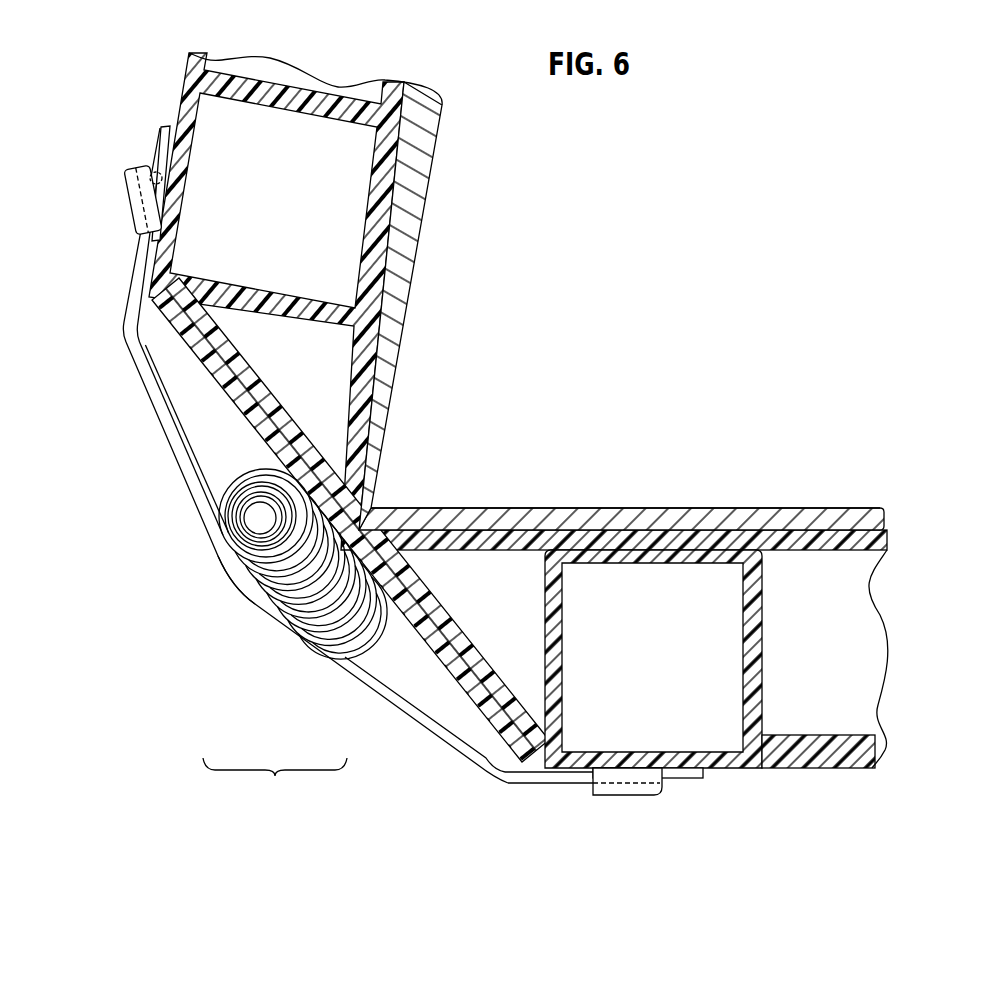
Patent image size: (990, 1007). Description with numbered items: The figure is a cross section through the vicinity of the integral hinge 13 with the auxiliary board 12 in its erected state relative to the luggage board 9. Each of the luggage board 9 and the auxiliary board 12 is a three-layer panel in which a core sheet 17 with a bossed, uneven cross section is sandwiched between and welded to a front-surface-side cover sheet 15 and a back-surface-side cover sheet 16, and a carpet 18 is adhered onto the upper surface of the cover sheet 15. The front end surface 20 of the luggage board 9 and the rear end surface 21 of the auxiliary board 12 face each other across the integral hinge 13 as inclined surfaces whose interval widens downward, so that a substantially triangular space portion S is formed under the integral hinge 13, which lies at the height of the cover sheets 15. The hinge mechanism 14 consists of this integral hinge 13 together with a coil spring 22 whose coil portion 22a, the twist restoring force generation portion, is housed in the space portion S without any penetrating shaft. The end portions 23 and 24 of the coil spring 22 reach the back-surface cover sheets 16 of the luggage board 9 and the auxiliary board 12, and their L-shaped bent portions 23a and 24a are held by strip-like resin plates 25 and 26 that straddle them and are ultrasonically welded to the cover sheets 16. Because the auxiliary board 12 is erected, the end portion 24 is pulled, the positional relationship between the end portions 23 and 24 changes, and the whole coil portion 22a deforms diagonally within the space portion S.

The luggage board 9 is at (678, 505).
The auxiliary board 12 is at (407, 309).
The integral hinge 13 is at (295, 627).
The hinge mechanism 14 is at (275, 782).
The cover sheet (front surface side) 15 is at (847, 552).
The cover sheet (back surface side) 16 is at (845, 740).
The core sheet 17 is at (763, 618).
The carpet 18 is at (795, 508).
The end surface (front end of the luggage board) 20 is at (470, 642).
The end surface (rear end of the auxiliary board) 21 is at (460, 392).
The coil spring 22 is at (382, 640).
The coil portion 22a is at (235, 582).
The end portion 23 is at (527, 790).
The bent portion 23a is at (650, 795).
The end portion 24 is at (124, 308).
The bent portion 24a is at (150, 178).
The resin plate 25 is at (700, 782).
The resin plate 26 is at (163, 143).
The space portion S is at (420, 675).